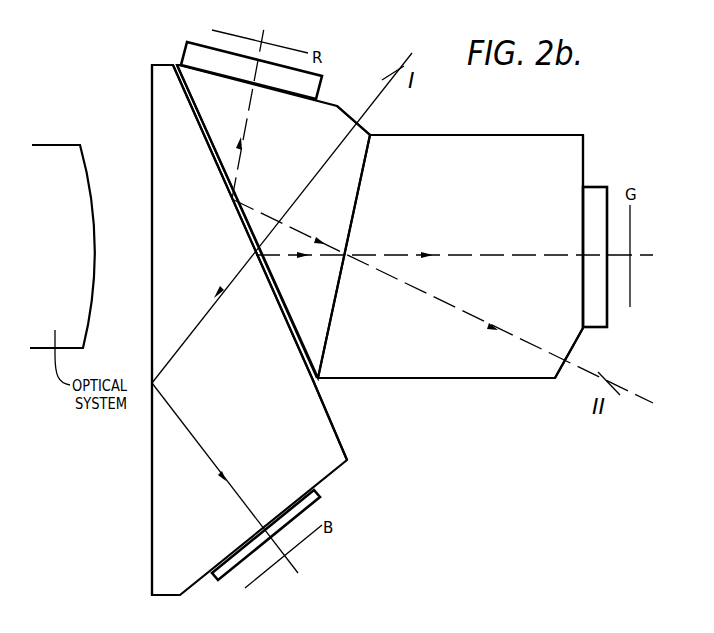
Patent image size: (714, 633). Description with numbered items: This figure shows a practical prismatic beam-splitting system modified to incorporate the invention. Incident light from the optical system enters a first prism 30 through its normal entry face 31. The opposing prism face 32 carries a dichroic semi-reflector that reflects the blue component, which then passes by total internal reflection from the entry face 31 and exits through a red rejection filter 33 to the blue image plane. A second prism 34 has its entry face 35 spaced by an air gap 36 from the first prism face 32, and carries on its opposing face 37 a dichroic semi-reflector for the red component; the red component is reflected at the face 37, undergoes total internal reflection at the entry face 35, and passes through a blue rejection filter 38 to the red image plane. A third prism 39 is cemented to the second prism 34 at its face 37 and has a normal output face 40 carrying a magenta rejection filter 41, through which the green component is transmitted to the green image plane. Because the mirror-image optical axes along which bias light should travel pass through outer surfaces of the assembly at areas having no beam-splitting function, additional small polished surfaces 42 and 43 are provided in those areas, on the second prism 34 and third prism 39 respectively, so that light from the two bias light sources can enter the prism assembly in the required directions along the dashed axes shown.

The first prism 30 is at (275, 443).
The entry face 31 is at (151, 172).
The prism face 32 is at (298, 348).
The red rejection filter 33 is at (320, 492).
The second prism 34 is at (340, 219).
The entry face 35 is at (186, 97).
The air gap 36 is at (319, 388).
The opposing face 37 is at (367, 160).
The blue rejection filter 38 is at (200, 55).
The third prism 39 is at (485, 186).
The output face 40 is at (585, 160).
The magenta rejection filter 41 is at (596, 197).
The polished surface 42 is at (362, 126).
The polished surface 43 is at (573, 345).